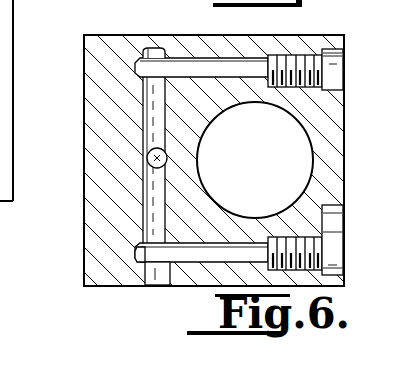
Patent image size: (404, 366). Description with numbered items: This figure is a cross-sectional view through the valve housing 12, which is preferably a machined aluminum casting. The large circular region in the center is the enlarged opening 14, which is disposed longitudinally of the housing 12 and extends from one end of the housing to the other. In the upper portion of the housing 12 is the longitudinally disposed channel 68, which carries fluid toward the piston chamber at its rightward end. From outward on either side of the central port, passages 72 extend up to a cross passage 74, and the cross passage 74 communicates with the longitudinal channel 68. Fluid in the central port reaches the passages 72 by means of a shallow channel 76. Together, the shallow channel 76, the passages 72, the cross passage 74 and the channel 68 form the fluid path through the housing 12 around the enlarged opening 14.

The housing 12 is at (118, 35).
The enlarged opening 14 is at (216, 212).
The longitudinally disposed channel 68 is at (167, 158).
The passages 72 is at (207, 70).
The cross passage 74 is at (150, 115).
The shallow channel 76 is at (331, 61).